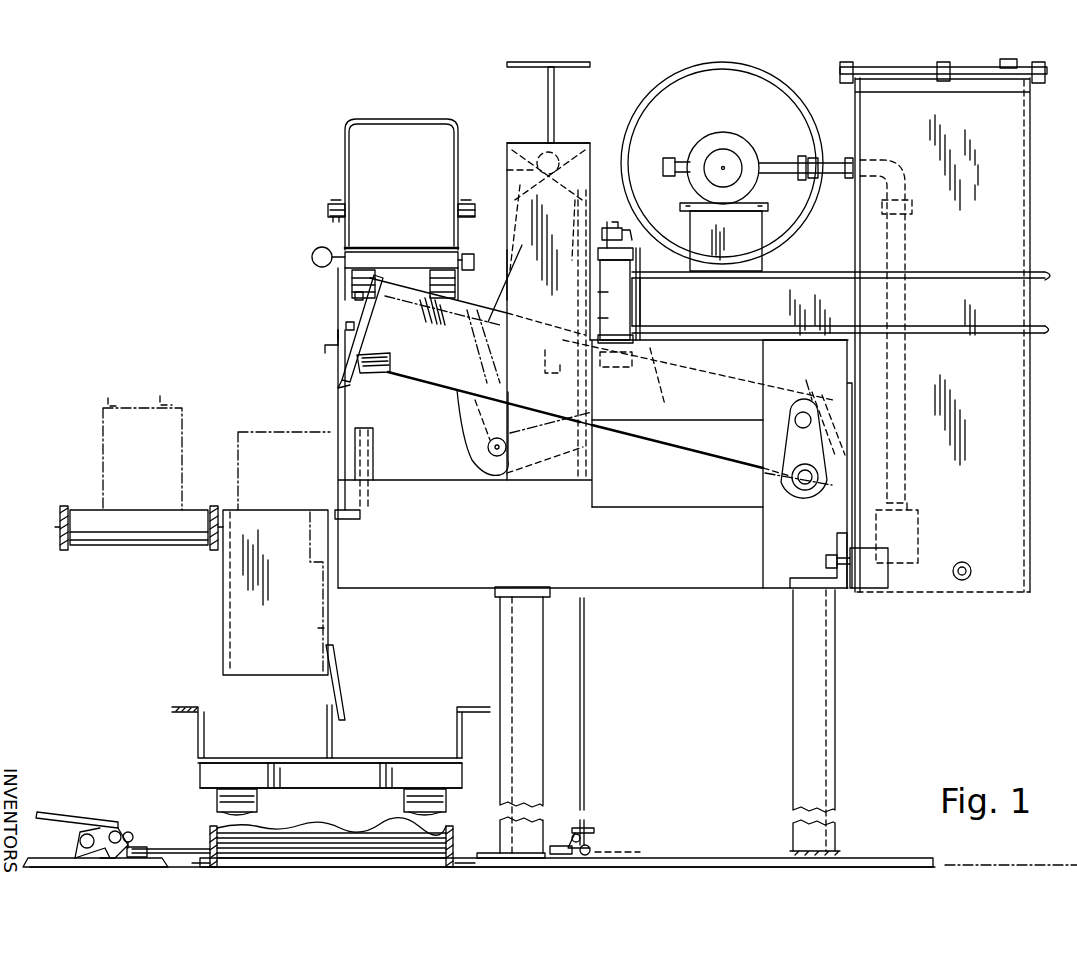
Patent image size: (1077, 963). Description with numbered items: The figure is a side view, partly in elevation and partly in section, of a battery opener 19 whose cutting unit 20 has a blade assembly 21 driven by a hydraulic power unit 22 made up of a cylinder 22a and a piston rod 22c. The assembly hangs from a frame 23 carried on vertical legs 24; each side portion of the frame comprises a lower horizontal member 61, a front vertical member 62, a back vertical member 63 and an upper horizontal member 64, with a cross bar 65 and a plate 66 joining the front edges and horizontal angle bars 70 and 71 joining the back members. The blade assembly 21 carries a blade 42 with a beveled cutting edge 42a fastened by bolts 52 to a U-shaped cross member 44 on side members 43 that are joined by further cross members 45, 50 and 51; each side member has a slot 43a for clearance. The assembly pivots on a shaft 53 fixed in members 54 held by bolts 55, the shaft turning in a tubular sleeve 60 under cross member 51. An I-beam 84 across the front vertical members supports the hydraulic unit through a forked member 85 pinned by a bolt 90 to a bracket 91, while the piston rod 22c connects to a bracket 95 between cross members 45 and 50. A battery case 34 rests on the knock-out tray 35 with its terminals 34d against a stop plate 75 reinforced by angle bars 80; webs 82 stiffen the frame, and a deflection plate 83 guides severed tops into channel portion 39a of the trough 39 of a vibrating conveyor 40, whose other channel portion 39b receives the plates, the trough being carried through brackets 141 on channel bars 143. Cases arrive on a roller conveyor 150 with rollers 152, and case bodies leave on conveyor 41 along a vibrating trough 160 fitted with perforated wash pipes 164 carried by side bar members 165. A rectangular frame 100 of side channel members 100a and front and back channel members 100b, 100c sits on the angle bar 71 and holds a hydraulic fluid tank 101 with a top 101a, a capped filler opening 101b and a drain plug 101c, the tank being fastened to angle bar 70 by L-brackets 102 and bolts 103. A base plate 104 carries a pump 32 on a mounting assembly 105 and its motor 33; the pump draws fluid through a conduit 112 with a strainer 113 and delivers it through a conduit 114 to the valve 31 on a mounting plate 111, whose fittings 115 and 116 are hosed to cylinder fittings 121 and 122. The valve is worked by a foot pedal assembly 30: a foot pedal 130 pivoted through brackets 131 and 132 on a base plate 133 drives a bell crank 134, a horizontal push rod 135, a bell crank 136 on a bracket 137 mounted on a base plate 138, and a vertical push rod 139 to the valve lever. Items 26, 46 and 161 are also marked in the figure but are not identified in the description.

The battery opener 19 is at (135, 246).
The cutting unit 20 is at (322, 348).
The blade assembly 21 is at (445, 392).
The hydraulic power unit 22 is at (505, 293).
The cylinder 22a is at (497, 274).
The piston rod 22c is at (592, 427).
The frame 23 is at (622, 590).
The vertical legs 24 is at (500, 620).
The base plate 26 is at (770, 857).
The foot pedal assembly 30 is at (78, 812).
The valve 31 is at (604, 226).
The pump 32 is at (710, 130).
The motor 33 is at (665, 108).
The battery case 34 is at (102, 432).
The terminals 34d is at (108, 398).
The knock-out tray 35 is at (223, 580).
The trough 39 is at (198, 730).
The channel portion 39a is at (422, 738).
The channel portion 39b is at (233, 737).
The conveyor 40 is at (178, 762).
The conveyor 41 is at (343, 152).
The blade 42 is at (350, 333).
The beveled lower cutting edge 42a is at (355, 386).
The side members 43 is at (655, 440).
The slot 43a is at (375, 372).
The cross member 44 is at (442, 313).
The cross member 45 is at (470, 346).
The springs 46 is at (388, 286).
The cross member 50 is at (690, 388).
The cross member 51 is at (802, 381).
The bolts 52 is at (346, 312).
The shaft 53 is at (800, 489).
The member 54 is at (798, 442).
The bolt 55 is at (795, 415).
The tubular sleeve member 60 is at (785, 476).
The lower horizontal member 61 is at (733, 583).
The front vertical member 62 is at (508, 150).
The back vertical member 63 is at (770, 510).
The upper horizontal member 64 is at (673, 418).
The cross bar 65 is at (312, 572).
The plate 66 is at (318, 629).
The horizontal angle bar 70 is at (840, 588).
The horizontal angle bar 71 is at (820, 340).
The stop plate 75 is at (363, 464).
The angle bars 80 is at (365, 474).
The reinforcing webs 82 is at (355, 522).
The deflection plate 83 is at (338, 676).
The I-beam 84 is at (546, 90).
The upper forked member 85 is at (507, 170).
The bolt 90 is at (577, 140).
The bracket 91 is at (534, 148).
The bracket 95 is at (456, 438).
The rectangular frame 100 is at (1032, 334).
The side channel members 100a is at (938, 322).
The front channel member 100b is at (645, 304).
The back channel member 100c is at (1043, 270).
The tank 101 is at (1010, 438).
The top 101a is at (1030, 70).
The capped filler opening 101b is at (1000, 66).
The drain plug 101c is at (962, 585).
The L-brackets 102 is at (885, 575).
The bolt 103 is at (825, 562).
The base plate 104 is at (846, 262).
The mounting assembly 105 is at (672, 205).
The vertical mounting plate 111 is at (652, 330).
The conduit 112 is at (822, 162).
The strainer 113 is at (918, 540).
The conduit 114 is at (672, 162).
The fitting 115 is at (596, 294).
The fitting 116 is at (597, 318).
The fitting 121 is at (548, 174).
The fitting 122 is at (588, 358).
The foot pedal 130 is at (120, 834).
The bracket 131 is at (78, 838).
The bracket 132 is at (75, 858).
The base plate 133 is at (36, 868).
The bell crank 134 is at (132, 840).
The horizontal push rod 135 is at (194, 836).
The bell crank 136 is at (575, 830).
The bracket 137 is at (590, 845).
The base plate 138 is at (620, 848).
The vertical push rod 139 is at (584, 694).
The brackets 141 is at (405, 800).
The channel bars 143 is at (453, 832).
The roller conveyor 150 is at (60, 515).
The rollers 152 is at (96, 532).
The vibrating trough 160 is at (337, 283).
The hopper bracket 161 is at (328, 220).
The perforated wash pipes 164 is at (468, 254).
The side bar members 165 is at (322, 247).